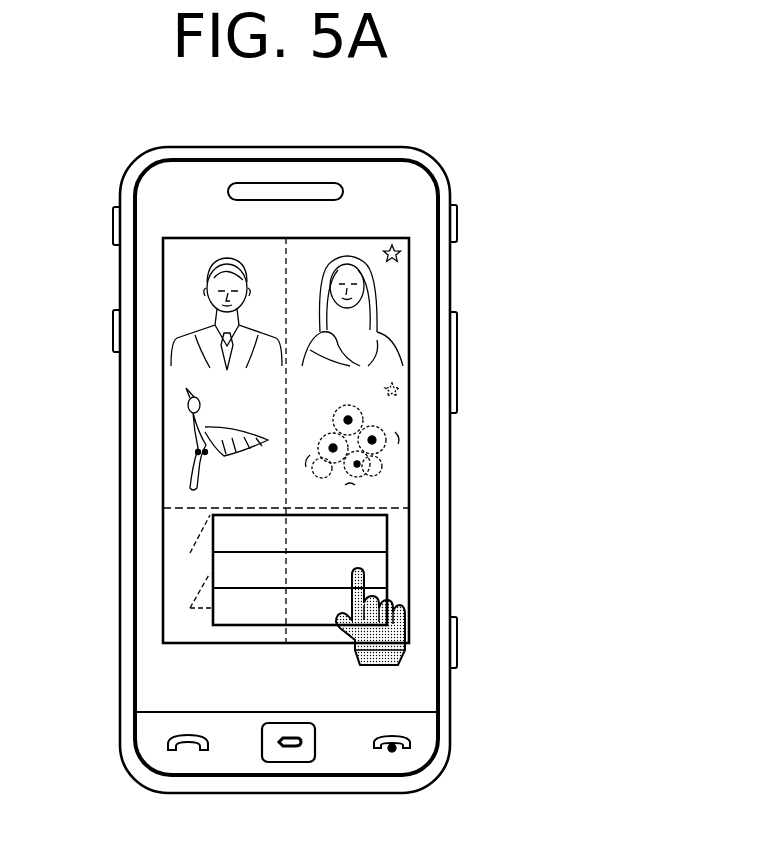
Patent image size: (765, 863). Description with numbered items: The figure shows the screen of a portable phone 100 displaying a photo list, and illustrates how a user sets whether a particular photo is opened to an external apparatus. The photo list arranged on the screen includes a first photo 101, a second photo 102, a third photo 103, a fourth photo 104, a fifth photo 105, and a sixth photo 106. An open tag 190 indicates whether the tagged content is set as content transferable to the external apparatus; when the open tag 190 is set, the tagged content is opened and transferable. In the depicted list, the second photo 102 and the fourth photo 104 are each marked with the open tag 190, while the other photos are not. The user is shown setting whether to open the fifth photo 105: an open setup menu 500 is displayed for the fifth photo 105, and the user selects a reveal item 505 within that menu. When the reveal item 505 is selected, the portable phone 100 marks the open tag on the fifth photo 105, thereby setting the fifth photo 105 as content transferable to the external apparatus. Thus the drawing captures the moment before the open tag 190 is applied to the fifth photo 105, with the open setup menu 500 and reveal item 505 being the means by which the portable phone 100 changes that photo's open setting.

The portable phone 100 is at (396, 147).
The first photo 101 is at (168, 292).
The second photo 102 is at (405, 290).
The third photo 103 is at (168, 440).
The fourth photo 104 is at (405, 438).
The fifth photo 105 is at (168, 582).
The sixth photo 106 is at (405, 596).
The open tag 190 is at (398, 250).
The open setup menu 500 is at (388, 532).
The reveal item 505 is at (388, 568).